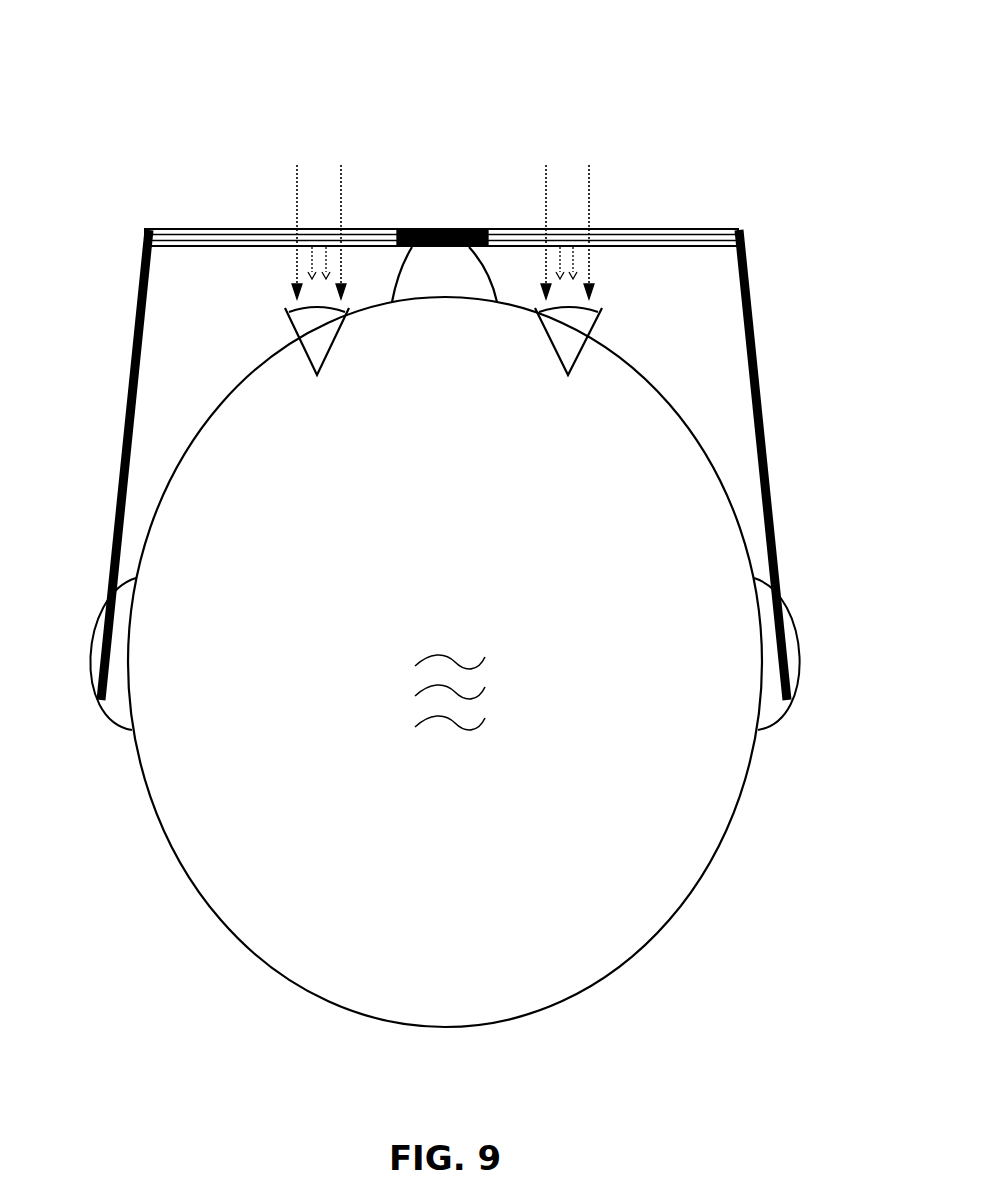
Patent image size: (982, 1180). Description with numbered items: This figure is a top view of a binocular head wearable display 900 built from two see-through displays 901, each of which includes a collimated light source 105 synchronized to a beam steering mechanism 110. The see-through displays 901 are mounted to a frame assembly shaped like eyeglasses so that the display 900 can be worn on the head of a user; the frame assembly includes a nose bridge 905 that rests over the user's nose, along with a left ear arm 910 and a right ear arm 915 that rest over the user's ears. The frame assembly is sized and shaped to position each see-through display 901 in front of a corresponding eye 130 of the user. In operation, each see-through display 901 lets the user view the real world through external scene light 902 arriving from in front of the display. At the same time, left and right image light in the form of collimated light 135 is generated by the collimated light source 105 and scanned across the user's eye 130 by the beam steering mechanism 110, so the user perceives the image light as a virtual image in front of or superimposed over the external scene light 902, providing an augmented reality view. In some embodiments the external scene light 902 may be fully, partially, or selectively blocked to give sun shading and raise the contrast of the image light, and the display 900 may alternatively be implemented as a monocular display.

The binocular head wearable display 900 is at (712, 67).
The see-through display 901 is at (193, 159).
The external scene light 902 is at (296, 187).
The nose bridge 905 is at (470, 229).
The collimated light source 105 is at (166, 228).
The beam steering mechanism 110 is at (165, 248).
The collimated light 135 is at (314, 256).
The eye 130 is at (327, 358).
The left ear arm 910 is at (122, 468).
The right ear arm 915 is at (768, 468).